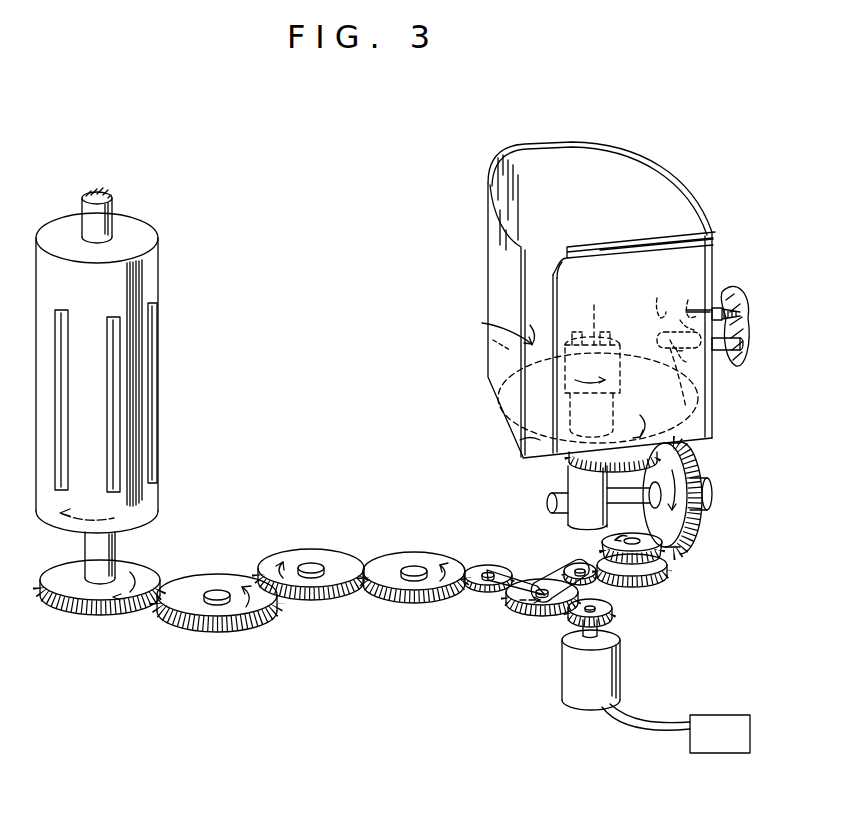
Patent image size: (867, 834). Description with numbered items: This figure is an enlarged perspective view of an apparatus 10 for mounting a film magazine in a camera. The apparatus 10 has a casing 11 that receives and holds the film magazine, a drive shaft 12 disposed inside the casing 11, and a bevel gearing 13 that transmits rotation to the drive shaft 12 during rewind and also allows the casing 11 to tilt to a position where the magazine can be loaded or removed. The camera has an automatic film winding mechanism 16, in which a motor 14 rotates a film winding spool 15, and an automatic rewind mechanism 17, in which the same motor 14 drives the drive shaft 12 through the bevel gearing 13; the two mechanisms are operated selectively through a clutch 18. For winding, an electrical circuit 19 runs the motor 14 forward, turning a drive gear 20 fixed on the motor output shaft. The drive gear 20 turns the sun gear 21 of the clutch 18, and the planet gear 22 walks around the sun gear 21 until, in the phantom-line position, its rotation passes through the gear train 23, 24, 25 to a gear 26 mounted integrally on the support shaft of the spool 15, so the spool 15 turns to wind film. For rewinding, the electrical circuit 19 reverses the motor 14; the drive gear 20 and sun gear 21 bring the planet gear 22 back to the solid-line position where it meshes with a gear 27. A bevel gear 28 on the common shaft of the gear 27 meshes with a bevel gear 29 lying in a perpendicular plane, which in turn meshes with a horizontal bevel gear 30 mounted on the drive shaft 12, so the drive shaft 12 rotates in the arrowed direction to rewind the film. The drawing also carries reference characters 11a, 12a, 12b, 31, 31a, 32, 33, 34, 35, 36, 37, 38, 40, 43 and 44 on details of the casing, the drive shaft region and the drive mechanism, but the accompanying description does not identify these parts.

The apparatus 10 is at (480, 414).
The casing 11 is at (615, 158).
The hopper outlet 11a is at (520, 450).
The drive shaft 12 is at (632, 379).
The agitator pins 12a is at (611, 331).
The agitator shaft 12b is at (596, 314).
The bevel gearing 13 is at (698, 462).
The motor 14 is at (612, 670).
The film winding spool 15 is at (150, 277).
The automatic film winding mechanism 16 is at (368, 506).
The automatic rewind mechanism 17 is at (509, 506).
The clutch 18 is at (528, 563).
The electrical circuit 19 is at (722, 748).
The drive gear 20 is at (606, 615).
The sun gear 21 is at (512, 602).
The planet gear 22 is at (492, 566).
The gear train gear 23 is at (420, 553).
The gear train gear 24 is at (333, 552).
The gear train gear 25 is at (215, 577).
The gear 26 is at (148, 566).
The gear 27 is at (660, 583).
The bevel gear 28 is at (663, 549).
The bevel gear 29 is at (700, 515).
The bevel gear 30 is at (567, 463).
The front panel 31 is at (618, 280).
The panel rim 31a is at (590, 262).
The rotation direction 32 is at (493, 327).
The slide member 33 is at (683, 357).
The shaft 34 is at (725, 353).
The pin 35 is at (694, 302).
The pin 36 is at (655, 296).
The adjusting knob 37 is at (762, 292).
The screw 38 is at (723, 300).
The gearbox 40 is at (588, 513).
The drive shaft 43 is at (545, 503).
The hub 44 is at (730, 482).